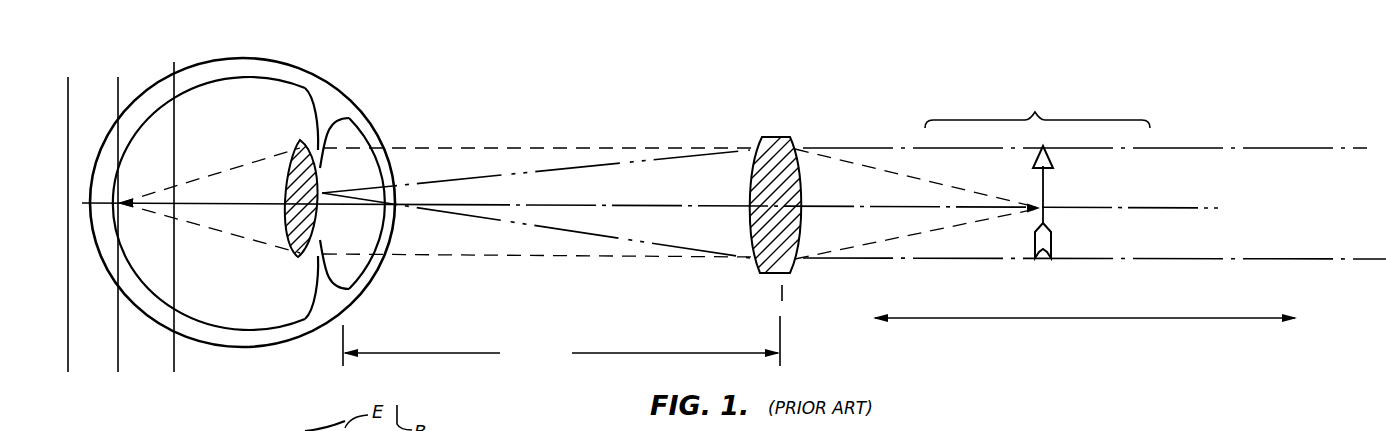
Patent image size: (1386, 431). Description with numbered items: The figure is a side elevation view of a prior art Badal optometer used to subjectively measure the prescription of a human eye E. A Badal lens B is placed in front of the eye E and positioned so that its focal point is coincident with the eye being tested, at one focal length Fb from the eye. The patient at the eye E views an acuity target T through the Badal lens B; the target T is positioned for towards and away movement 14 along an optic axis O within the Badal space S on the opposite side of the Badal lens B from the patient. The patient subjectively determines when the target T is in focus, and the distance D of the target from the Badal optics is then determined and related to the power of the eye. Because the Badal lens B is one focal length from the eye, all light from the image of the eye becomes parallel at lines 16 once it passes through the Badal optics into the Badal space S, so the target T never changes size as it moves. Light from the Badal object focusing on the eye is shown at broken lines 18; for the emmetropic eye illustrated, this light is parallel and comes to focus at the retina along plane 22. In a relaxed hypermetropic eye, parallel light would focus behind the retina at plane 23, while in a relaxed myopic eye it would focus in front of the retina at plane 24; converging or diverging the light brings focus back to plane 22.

The towards and away movement 14 is at (1165, 318).
The lines 16 is at (577, 168).
The broken lines 18 is at (455, 147).
The plane 22 is at (118, 90).
The plane 23 is at (68, 90).
The plane 24 is at (174, 75).
The Badal lens B is at (778, 137).
The distance D is at (786, 292).
The human eye E is at (273, 62).
The optic axis O is at (1210, 208).
The Badal space S is at (1037, 104).
The acuity target T is at (1047, 187).
The back focal length Fb is at (561, 344).